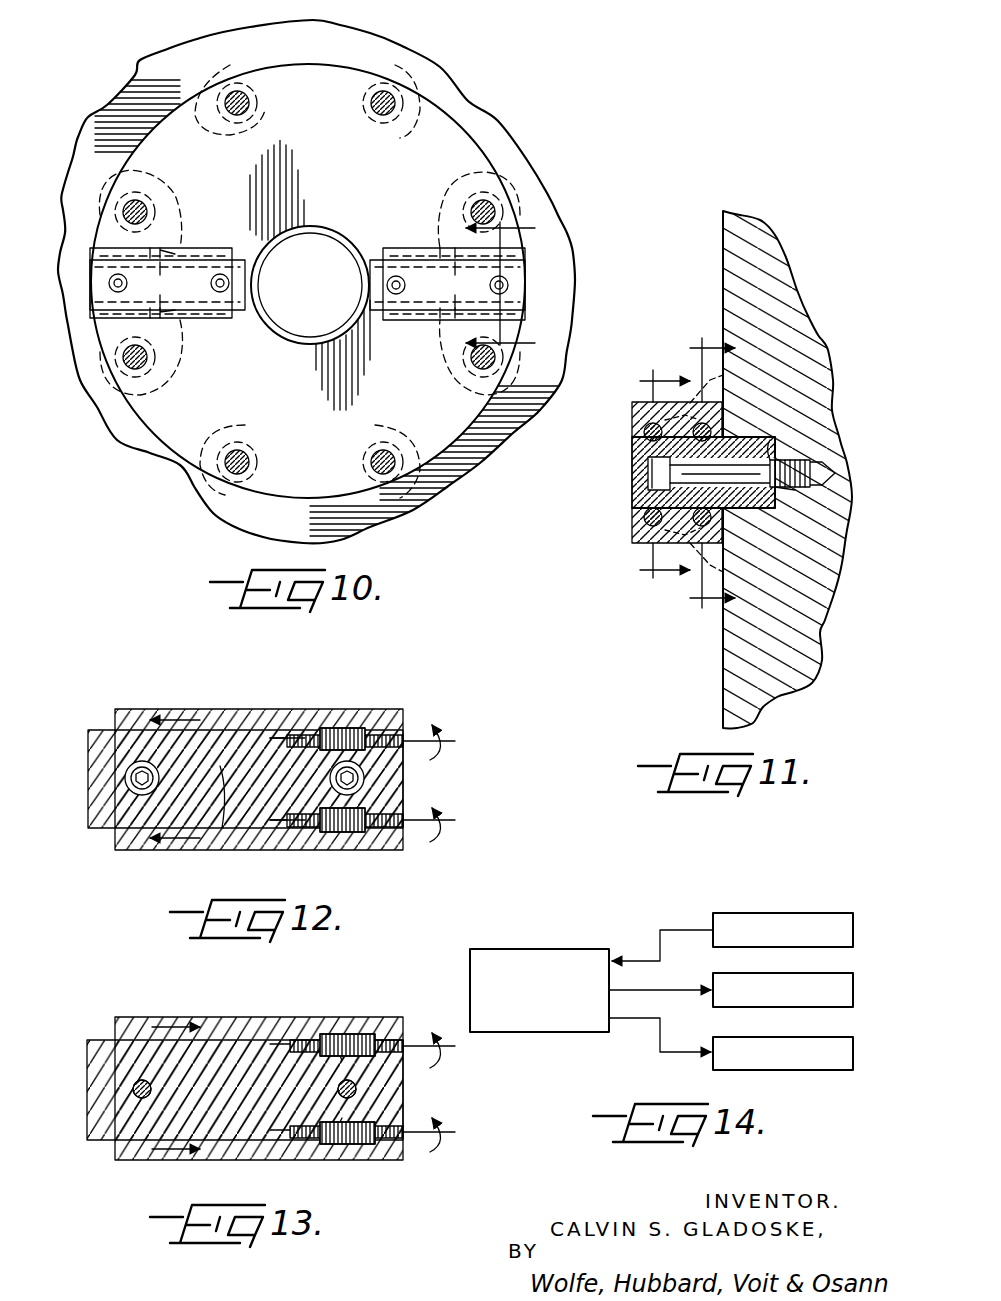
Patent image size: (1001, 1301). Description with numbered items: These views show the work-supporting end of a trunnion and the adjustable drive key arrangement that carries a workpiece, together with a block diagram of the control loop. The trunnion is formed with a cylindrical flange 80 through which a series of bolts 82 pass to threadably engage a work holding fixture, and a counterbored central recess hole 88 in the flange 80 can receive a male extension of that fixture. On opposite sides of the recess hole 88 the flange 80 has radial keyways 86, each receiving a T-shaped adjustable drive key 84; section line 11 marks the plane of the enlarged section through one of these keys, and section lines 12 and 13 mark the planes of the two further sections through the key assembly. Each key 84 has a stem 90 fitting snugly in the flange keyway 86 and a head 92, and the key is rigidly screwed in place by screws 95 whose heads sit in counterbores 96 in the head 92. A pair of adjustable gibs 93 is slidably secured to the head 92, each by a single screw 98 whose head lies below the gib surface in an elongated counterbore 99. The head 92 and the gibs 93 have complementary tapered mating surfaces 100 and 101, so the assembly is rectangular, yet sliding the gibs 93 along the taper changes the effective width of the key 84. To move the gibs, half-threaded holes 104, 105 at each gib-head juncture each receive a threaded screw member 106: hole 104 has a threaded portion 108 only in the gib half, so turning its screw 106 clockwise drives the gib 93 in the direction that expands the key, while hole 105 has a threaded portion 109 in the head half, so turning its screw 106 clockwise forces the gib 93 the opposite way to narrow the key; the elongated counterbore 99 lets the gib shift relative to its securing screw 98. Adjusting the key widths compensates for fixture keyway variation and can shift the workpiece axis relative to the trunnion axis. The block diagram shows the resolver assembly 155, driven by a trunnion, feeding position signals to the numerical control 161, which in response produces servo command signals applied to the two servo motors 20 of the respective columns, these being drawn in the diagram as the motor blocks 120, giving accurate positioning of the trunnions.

In FIG. 10, the section line 11- 11 is at (512, 284).
In FIG. 11, the section line 12- 12 is at (651, 478).
In FIG. 11, the section line 13- 13 is at (701, 475).
In FIG. 10, the servo motor 20 is at (520, 165).
In FIG. 10, the cylindrical flange 80 is at (470, 118).
In FIG. 11, the cylindrical flange 80 is at (800, 315).
In FIG. 10, the bolts 82 is at (237, 103).
In FIG. 10, the adjustable drive key 84 is at (382, 250).
In FIG. 11, the adjustable drive key 84 is at (628, 530).
In FIG. 12, the adjustable drive key 84 is at (235, 702).
In FIG. 13, the adjustable drive key 84 is at (220, 1012).
In FIG. 11, the radial keyway 86 is at (772, 452).
In FIG. 10, the counterbored central recess hole 88 is at (328, 232).
In FIG. 11, the stem 90 is at (782, 490).
In FIG. 10, the key head 92 is at (245, 298).
In FIG. 11, the key head 92 is at (635, 497).
In FIG. 12, the key head 92 is at (88, 748).
In FIG. 13, the key head 92 is at (90, 1065).
In FIG. 10, the adjustable gib 93 is at (100, 252).
In FIG. 11, the adjustable gib 93 is at (633, 407).
In FIG. 12, the adjustable gib 93 is at (148, 712).
In FIG. 13, the adjustable gib 93 is at (125, 1020).
In FIG. 10, the screw 95 is at (110, 283).
In FIG. 11, the screw 95 is at (800, 464).
In FIG. 12, the screw 95 is at (125, 778).
In FIG. 13, the screw 95 is at (133, 1089).
In FIG. 11, the counterbore 96 is at (648, 470).
In FIG. 10, the screw 98 is at (165, 248).
In FIG. 11, the screw 98 is at (723, 380).
In FIG. 10, the elongated counterbore 99 is at (180, 246).
In FIG. 12, the tapered mating surface 100 is at (95, 730).
In FIG. 12, the tapered mating surface 101 is at (213, 789).
In FIG. 12, the half-threaded hole 104 is at (355, 734).
In FIG. 13, the half-threaded hole 105 is at (342, 1120).
In FIG. 11, the threaded screw member 106 is at (644, 432).
In FIG. 12, the threaded screw member 106 is at (335, 730).
In FIG. 13, the threaded screw member 106 is at (355, 1036).
In FIG. 12, the threaded portion 108 is at (302, 815).
In FIG. 13, the threaded portion 109 is at (300, 1040).
In FIG. 14, the motor 120 is at (810, 973).
In FIG. 14, the rotary position feed back resolver assembly 155 is at (800, 913).
In FIG. 14, the numerical control 161 is at (520, 949).